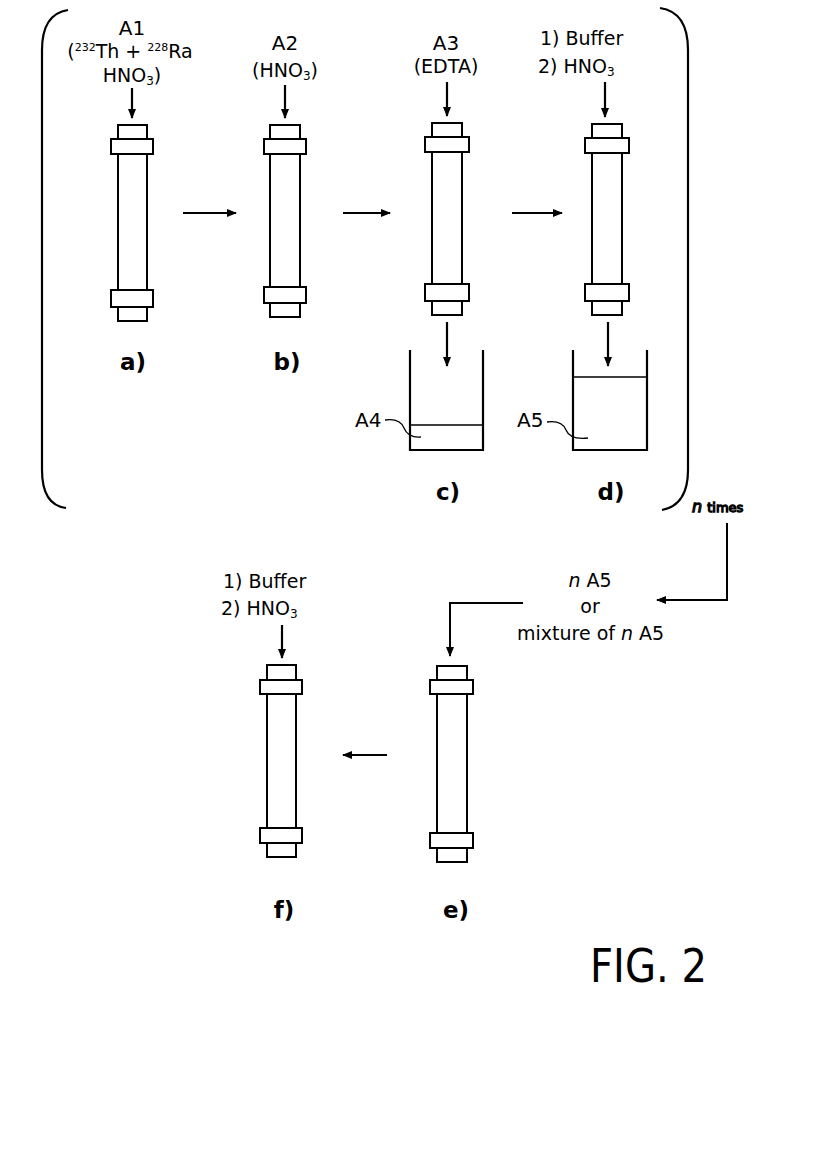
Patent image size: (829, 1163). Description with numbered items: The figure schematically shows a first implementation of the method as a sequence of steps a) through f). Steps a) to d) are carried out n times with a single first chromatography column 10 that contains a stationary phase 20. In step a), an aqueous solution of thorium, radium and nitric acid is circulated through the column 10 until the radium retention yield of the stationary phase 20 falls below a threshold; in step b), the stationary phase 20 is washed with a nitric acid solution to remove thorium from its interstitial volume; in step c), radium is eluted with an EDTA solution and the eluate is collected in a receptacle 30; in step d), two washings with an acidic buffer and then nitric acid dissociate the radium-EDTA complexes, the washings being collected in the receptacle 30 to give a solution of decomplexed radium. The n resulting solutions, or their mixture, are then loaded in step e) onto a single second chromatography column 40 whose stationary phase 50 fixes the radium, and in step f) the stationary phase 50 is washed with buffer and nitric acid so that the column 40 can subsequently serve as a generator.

The first chromatography column 10 is at (108, 152).
The stationary phase 20 is at (125, 235).
The receptacle 30 is at (406, 392).
The second chromatography column 40 is at (256, 692).
The stationary phase 50 is at (455, 777).